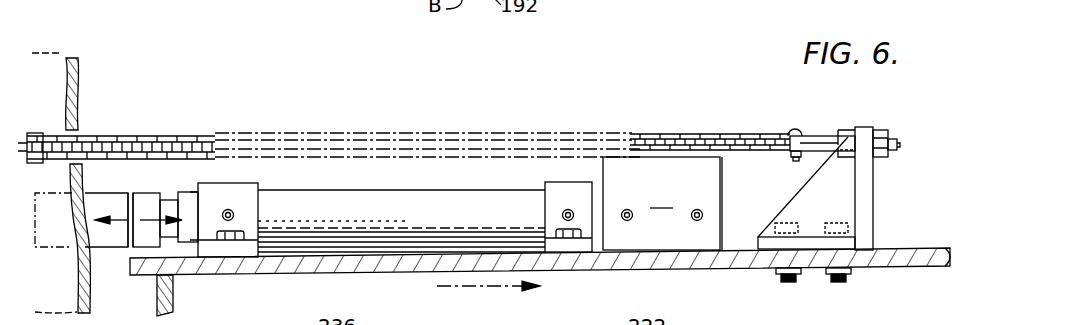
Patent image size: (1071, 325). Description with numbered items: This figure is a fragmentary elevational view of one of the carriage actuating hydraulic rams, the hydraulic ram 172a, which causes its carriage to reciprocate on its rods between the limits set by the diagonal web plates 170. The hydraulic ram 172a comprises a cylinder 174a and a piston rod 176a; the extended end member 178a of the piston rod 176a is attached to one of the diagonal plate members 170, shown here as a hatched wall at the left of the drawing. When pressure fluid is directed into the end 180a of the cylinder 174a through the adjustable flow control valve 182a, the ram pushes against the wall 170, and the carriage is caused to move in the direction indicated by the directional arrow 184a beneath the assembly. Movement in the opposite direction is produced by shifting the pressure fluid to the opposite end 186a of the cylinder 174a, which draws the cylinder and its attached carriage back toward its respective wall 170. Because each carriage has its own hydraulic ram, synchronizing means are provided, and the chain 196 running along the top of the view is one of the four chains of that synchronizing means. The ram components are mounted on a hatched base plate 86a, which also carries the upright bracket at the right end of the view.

The diagonal web plate 170 is at (50, 77).
The extended end member 178a is at (120, 197).
The piston rod 176a is at (172, 205).
The opposite end of cylinder 186a is at (240, 185).
The hydraulic ram 172a is at (384, 186).
The cylinder 174a is at (482, 218).
The end of cylinder 180a is at (548, 197).
The adjustable flow control valve 182a is at (642, 170).
The chain 196 is at (745, 134).
The base plate 86a is at (298, 266).
The directional arrow 184a is at (496, 288).